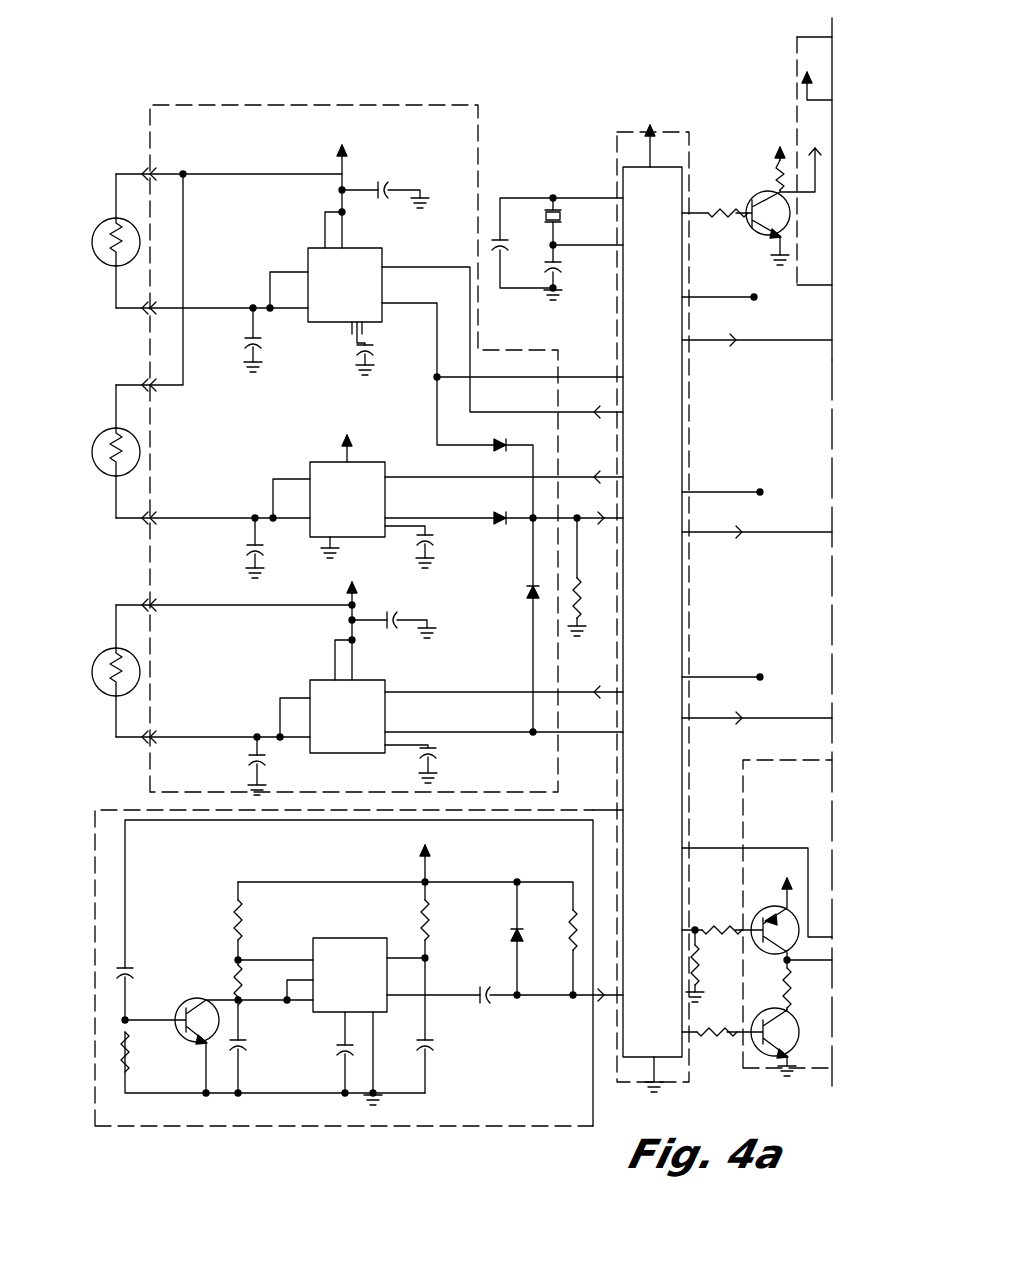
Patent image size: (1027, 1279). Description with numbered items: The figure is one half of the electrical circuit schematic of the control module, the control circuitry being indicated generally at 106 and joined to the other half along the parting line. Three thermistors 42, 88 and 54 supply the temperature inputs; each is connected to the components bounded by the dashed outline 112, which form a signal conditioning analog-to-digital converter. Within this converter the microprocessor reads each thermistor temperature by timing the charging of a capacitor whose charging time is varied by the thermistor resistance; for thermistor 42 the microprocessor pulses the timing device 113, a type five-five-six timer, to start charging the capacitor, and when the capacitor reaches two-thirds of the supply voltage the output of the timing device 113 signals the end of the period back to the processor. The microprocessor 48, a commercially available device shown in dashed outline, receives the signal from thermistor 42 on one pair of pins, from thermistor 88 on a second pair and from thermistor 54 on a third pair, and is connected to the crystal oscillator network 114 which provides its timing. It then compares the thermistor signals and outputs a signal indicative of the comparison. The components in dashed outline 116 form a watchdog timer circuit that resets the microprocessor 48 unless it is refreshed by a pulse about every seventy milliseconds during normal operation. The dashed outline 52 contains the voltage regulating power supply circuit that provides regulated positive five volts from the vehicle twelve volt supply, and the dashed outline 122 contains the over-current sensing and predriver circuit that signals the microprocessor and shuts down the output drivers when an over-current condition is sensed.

The thermistor 42 is at (88, 232).
The thermistor 88 is at (88, 442).
The thermistor 54 is at (88, 662).
The signal conditioning analog-to-digital converter 112 is at (256, 105).
The timing device 113 is at (322, 322).
The crystal oscillator circuit 114 is at (535, 190).
The controller circuit 106 is at (538, 112).
The microprocessor 48 is at (617, 132).
The voltage regulating power supply circuit 52 is at (797, 105).
The over-current sensing circuit 122 is at (743, 782).
The timer circuit 116 is at (176, 1126).